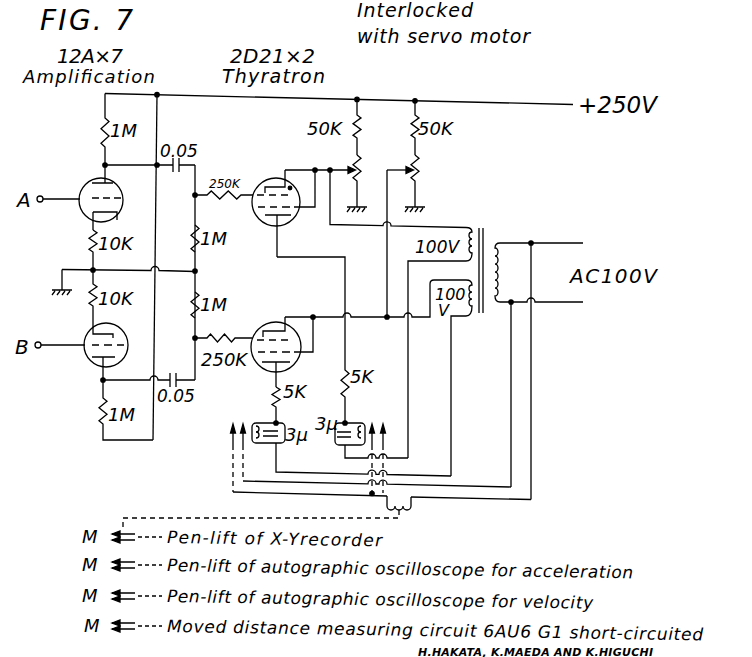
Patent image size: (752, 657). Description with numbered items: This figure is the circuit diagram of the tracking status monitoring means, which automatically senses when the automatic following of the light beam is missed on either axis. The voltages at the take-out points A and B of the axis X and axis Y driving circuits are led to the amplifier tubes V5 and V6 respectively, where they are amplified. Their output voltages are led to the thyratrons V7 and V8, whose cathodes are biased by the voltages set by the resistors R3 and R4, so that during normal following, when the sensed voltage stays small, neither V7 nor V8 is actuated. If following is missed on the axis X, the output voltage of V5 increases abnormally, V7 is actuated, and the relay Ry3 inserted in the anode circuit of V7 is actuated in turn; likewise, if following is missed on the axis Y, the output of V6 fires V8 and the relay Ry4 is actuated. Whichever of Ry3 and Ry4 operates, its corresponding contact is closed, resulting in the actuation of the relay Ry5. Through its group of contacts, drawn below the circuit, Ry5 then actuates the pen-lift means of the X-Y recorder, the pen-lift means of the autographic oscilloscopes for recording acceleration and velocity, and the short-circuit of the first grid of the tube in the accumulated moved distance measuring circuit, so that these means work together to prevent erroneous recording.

The amplifier tube V5 is at (83, 192).
The amplifier tube V6 is at (93, 345).
The thyratron V7 is at (283, 206).
The thyratron V8 is at (282, 344).
The bias setting resistor R3 is at (368, 175).
The bias setting resistor R4 is at (427, 181).
The relay Ry3 is at (369, 440).
The relay Ry4 is at (252, 439).
The relay Ry5 is at (418, 508).